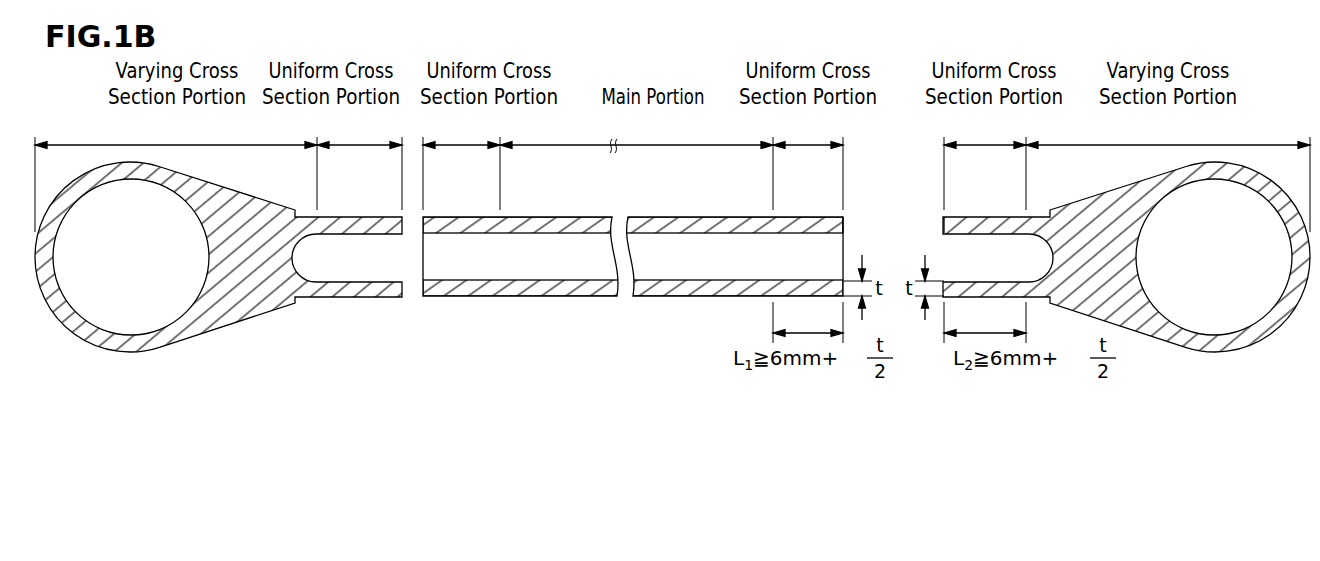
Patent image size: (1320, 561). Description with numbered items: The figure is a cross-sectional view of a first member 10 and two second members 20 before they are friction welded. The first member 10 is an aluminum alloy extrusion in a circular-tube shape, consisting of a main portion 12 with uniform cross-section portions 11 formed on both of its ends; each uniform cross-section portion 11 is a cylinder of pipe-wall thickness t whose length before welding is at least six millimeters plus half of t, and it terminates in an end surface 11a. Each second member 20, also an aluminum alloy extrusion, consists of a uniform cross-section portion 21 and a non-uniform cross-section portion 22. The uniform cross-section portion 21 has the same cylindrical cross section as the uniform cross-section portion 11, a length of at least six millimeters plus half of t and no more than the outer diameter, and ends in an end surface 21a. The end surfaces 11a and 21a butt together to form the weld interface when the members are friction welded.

The first member 10 is at (478, 312).
The uniform cross-section portion 11 is at (633, 160).
The end surface 11a is at (843, 222).
The main portion 12 is at (636, 132).
The second member 20 is at (128, 362).
The uniform cross-section portion 21 is at (671, 160).
The end surface 21a is at (943, 217).
The non-uniform cross-section portion 22 is at (672, 171).